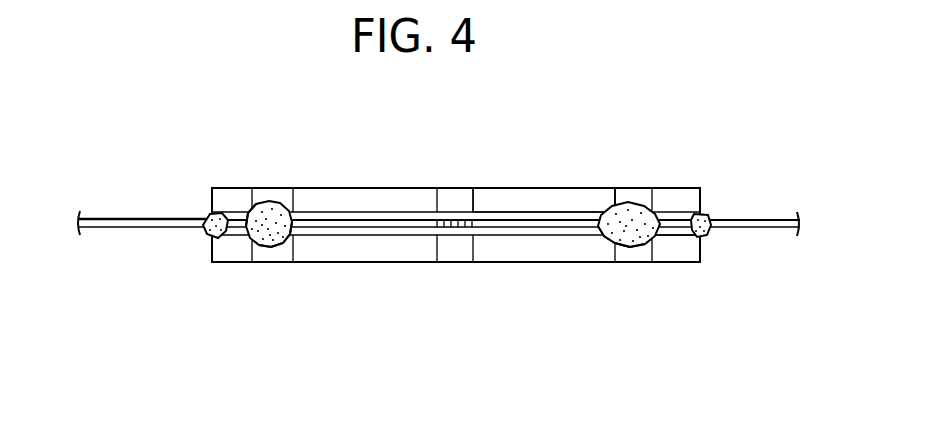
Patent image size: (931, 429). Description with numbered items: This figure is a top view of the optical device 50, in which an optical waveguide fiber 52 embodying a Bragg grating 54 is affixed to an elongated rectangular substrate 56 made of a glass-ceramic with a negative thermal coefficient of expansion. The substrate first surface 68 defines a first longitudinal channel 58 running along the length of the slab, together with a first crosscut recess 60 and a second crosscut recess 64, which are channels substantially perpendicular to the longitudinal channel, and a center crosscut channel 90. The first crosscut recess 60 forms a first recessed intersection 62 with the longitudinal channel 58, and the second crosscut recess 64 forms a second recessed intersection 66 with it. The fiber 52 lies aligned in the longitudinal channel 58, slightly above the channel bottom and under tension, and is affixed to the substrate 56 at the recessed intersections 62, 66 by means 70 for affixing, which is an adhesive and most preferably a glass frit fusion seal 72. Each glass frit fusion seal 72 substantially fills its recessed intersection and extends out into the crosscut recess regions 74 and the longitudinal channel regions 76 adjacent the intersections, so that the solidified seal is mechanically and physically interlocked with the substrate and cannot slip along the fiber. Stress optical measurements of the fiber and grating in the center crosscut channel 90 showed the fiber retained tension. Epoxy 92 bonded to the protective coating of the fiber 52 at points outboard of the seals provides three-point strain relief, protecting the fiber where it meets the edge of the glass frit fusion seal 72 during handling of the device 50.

The optical device 50 is at (186, 327).
The optical waveguide fiber 52 is at (124, 232).
The grating 54 is at (462, 219).
The substrate 56 is at (676, 264).
The first longitudinal channel 58 is at (381, 210).
The first crosscut recess 60 is at (277, 197).
The first recessed intersection 62 is at (298, 240).
The second crosscut recess 64 is at (637, 191).
The second recessed intersection 66 is at (632, 246).
The substrate first surface 68 is at (546, 200).
The means for affixing 70 is at (279, 247).
The glass frit fusion seal 72 is at (246, 204).
The crosscut recess regions 74 is at (299, 207).
The longitudinal channel regions 76 is at (606, 202).
The center crosscut channel 90 is at (452, 264).
The epoxy 92 is at (207, 213).